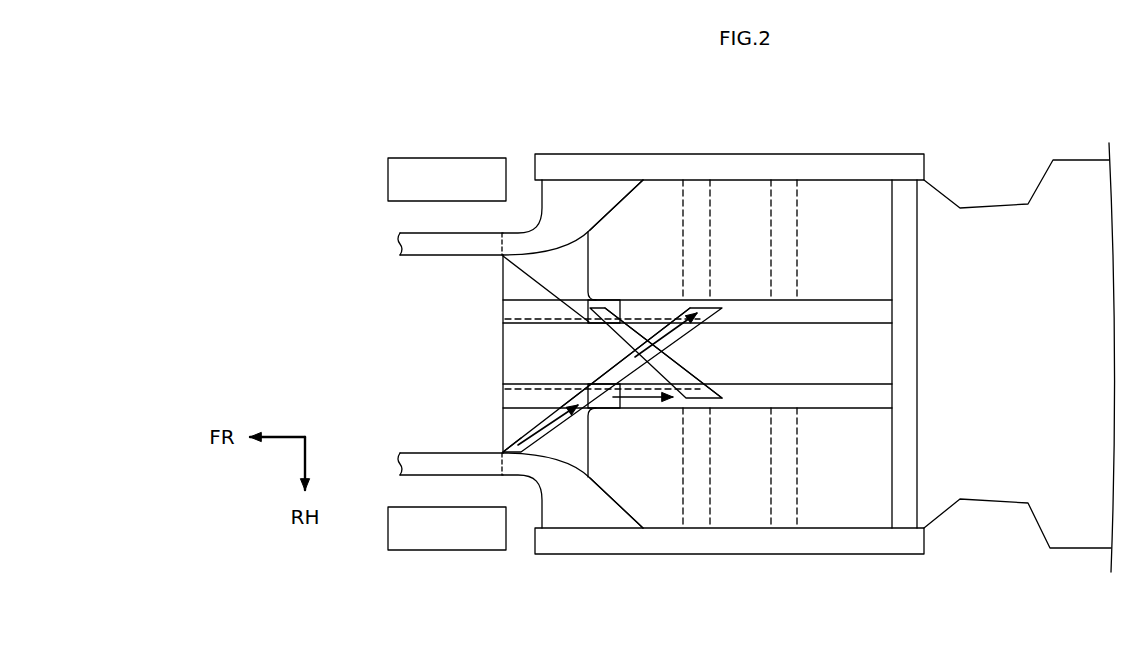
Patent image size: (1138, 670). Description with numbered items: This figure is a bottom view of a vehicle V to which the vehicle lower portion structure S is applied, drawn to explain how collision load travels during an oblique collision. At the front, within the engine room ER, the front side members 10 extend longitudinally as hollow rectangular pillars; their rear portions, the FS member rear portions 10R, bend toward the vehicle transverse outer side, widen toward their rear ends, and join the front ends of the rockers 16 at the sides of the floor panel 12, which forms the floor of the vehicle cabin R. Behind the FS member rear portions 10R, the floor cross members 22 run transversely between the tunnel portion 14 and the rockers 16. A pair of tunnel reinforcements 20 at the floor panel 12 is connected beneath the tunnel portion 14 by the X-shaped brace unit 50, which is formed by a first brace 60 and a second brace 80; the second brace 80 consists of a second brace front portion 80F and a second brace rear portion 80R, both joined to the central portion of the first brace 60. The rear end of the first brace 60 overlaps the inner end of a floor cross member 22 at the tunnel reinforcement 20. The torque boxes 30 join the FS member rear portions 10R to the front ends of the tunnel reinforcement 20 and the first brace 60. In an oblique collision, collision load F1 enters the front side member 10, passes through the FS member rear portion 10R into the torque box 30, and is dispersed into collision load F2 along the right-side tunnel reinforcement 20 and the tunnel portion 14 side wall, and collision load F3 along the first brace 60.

The front side member 10 is at (414, 260).
The front side member rear portion 10R is at (600, 214).
The floor panel 12 is at (499, 312).
The tunnel portion 14 is at (878, 356).
The rocker 16 is at (745, 154).
The tunnel reinforcement 20 is at (838, 300).
The floor cross member 22 is at (683, 198).
The inner torque box 30 is at (517, 272).
The brace unit 50 is at (606, 352).
The first brace 60 is at (601, 371).
The second brace 80 is at (766, 343).
The second brace front portion 80F is at (645, 330).
The second brace rear portion 80R is at (692, 369).
The vehicle V is at (400, 111).
The vehicle cabin R is at (645, 208).
The engine room ER is at (358, 348).
The vehicle lower portion structure S is at (455, 373).
The collision load F1 is at (554, 430).
The collision load F2 is at (647, 399).
The collision load F3 is at (635, 357).